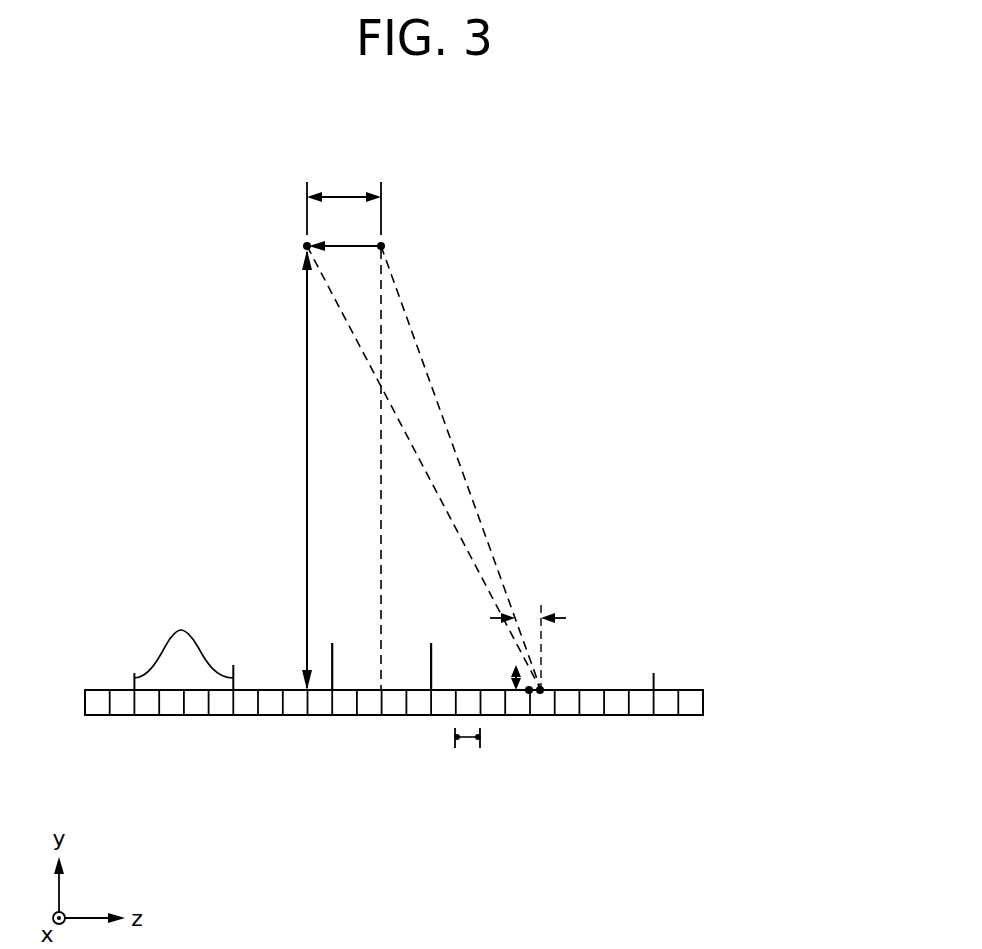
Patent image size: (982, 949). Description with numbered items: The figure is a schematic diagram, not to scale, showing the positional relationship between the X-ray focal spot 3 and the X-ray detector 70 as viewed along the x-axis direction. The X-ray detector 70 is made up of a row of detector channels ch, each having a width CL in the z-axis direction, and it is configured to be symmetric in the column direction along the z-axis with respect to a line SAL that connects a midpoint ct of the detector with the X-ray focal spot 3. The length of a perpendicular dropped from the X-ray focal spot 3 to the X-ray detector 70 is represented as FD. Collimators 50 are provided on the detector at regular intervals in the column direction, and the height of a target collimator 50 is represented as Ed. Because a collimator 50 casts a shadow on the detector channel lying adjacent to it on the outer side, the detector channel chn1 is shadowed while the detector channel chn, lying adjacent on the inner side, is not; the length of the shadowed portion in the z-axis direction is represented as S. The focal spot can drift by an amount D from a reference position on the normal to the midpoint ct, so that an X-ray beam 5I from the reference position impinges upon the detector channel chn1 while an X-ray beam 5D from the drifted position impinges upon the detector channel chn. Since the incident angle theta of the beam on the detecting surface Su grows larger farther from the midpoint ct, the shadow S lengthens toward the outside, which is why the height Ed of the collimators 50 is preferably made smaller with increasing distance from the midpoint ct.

The X-ray focal spot 3 is at (305, 246).
The X-ray beam at drifted position 5D is at (463, 543).
The X-ray beam at reference position 5I is at (464, 477).
The collimator 50 is at (183, 645).
The X-ray detector 70 is at (722, 700).
The amount of drift D is at (344, 202).
The length of perpendicular from focal spot to detector FD is at (291, 470).
The midpoint ct is at (382, 715).
The line connecting midpoint and focal spot SAL is at (384, 622).
The incident angle theta is at (528, 647).
The height of collimator Ed is at (512, 676).
The length of shadowed portion S is at (540, 687).
The detecting surface Su is at (693, 690).
The width of detector channel CL is at (469, 749).
The detector channel ch is at (202, 707).
The detector channel n chn is at (520, 706).
The detector channel n+1 chn1 is at (543, 706).